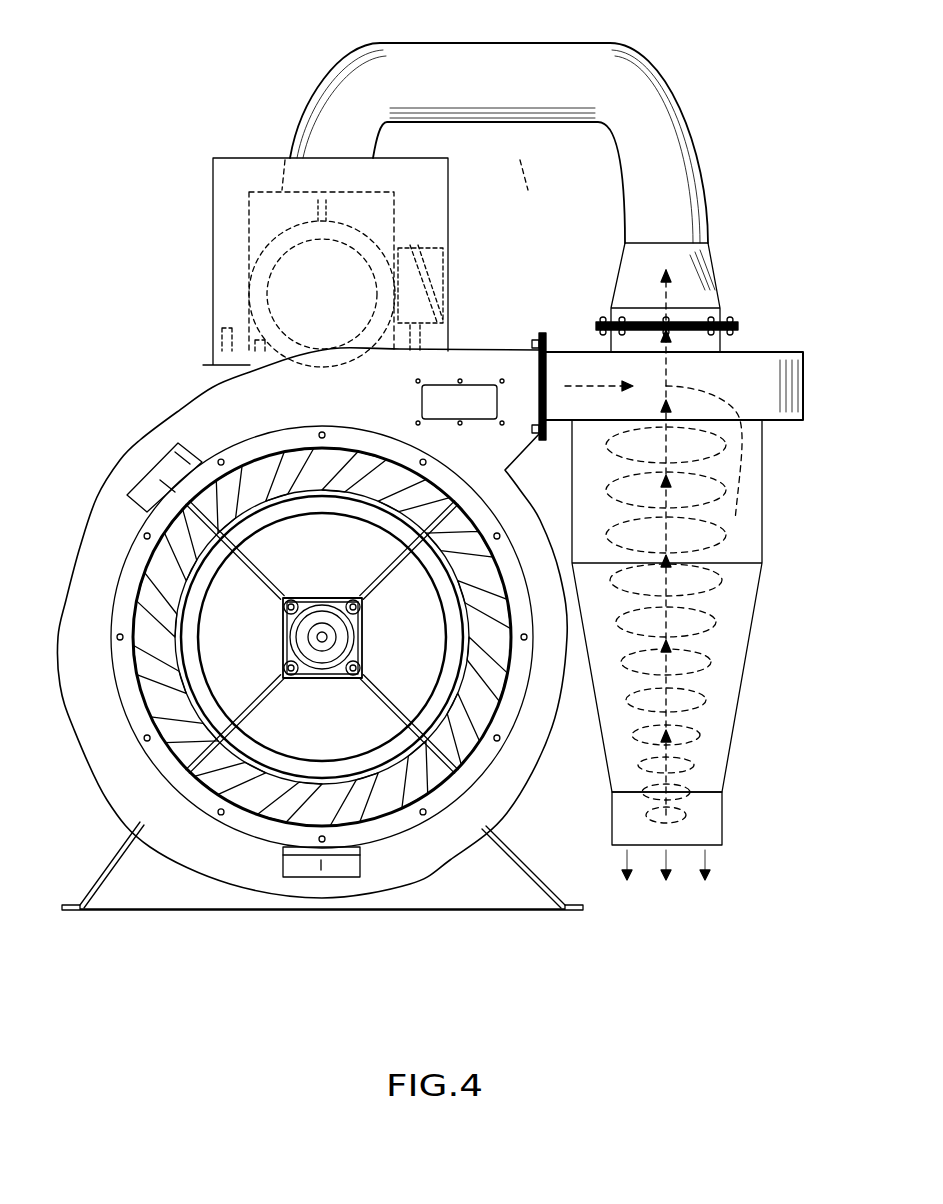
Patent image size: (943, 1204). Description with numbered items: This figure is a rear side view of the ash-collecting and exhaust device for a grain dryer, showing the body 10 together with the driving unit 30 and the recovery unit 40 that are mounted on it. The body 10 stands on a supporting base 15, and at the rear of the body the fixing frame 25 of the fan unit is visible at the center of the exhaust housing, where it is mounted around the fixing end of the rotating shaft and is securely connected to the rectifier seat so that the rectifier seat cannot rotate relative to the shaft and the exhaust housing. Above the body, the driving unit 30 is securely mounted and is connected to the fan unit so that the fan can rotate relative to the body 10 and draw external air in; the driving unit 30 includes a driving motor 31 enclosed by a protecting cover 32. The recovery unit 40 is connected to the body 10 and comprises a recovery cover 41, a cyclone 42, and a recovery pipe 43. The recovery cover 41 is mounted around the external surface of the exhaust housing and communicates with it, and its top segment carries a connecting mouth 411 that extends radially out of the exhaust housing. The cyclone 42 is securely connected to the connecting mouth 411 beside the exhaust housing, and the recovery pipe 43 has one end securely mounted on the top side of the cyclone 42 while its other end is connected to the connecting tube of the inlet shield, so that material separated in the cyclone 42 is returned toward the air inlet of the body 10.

The body 10 is at (320, 635).
The supporting base 15 is at (215, 898).
The fixing frame 25 is at (355, 645).
The driving unit 30 is at (352, 262).
The driving motor 31 is at (272, 291).
The protecting cover 32 is at (252, 211).
The recovery unit 40 is at (552, 440).
The recovery cover 41 is at (315, 587).
The connecting mouth 411 is at (505, 360).
The cyclone 42 is at (738, 690).
The recovery pipe 43 is at (520, 58).